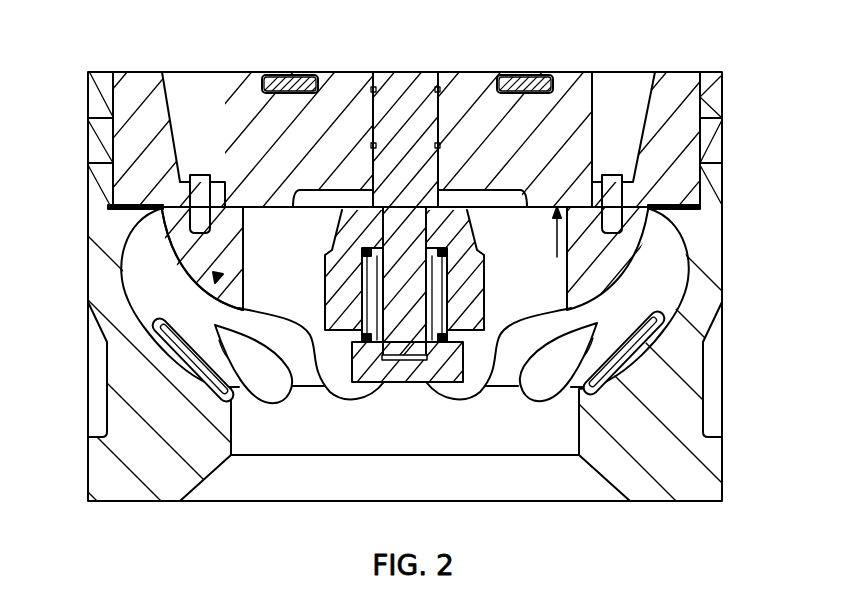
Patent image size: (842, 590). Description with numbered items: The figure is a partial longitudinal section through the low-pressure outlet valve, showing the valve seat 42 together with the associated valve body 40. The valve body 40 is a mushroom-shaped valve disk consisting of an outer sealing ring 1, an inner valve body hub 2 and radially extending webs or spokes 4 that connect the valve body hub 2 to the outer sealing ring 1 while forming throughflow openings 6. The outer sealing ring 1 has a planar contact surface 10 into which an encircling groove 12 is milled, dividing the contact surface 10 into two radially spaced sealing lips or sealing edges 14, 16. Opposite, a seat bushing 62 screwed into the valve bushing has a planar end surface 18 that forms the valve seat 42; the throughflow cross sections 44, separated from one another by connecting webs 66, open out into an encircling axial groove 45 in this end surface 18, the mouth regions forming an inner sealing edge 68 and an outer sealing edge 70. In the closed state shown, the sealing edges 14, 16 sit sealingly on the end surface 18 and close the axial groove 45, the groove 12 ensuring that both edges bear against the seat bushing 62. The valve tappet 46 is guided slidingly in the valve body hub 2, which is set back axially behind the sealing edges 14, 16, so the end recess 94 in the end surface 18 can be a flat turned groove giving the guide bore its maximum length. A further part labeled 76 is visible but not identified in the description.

The outer sealing ring 1 is at (645, 250).
The inner valve body hub 2 is at (560, 297).
The radially extending webs/spokes 4 is at (568, 305).
The throughflow openings 6 is at (262, 268).
The planar contact surface 10 is at (165, 183).
The encircling groove 12 is at (185, 228).
The sealing edge 14 is at (647, 230).
The sealing edge 16 is at (700, 200).
The planar end surface 18 is at (208, 263).
The valve body 40 is at (215, 278).
The valve seat 42 is at (547, 242).
The throughflow cross sections 44 is at (190, 157).
The encircling axial groove 45 is at (213, 193).
The valve tappet 46 is at (407, 168).
The seat bushing 62 is at (663, 110).
The connecting webs 66 is at (202, 107).
The inner sealing edge 68 is at (583, 198).
The outer sealing edge 70 is at (703, 125).
The bushing collar 76 is at (447, 232).
The end recess 94 is at (305, 195).